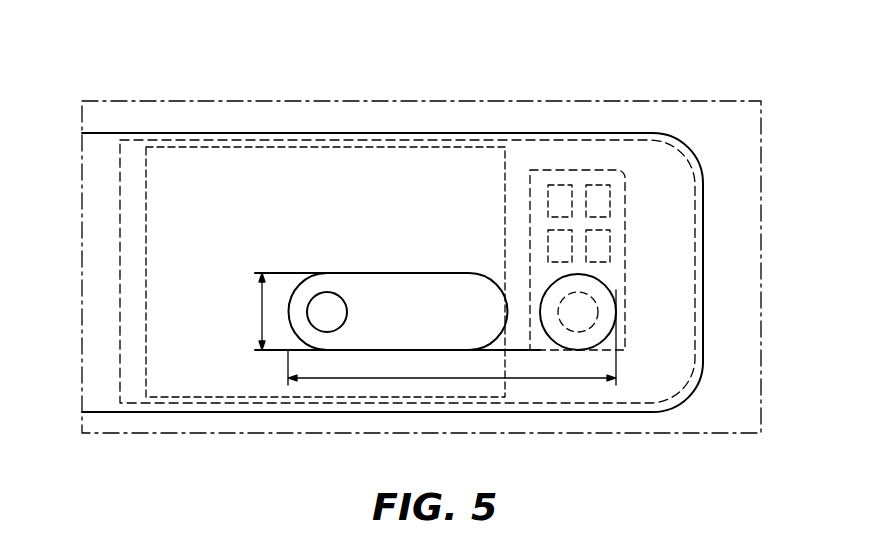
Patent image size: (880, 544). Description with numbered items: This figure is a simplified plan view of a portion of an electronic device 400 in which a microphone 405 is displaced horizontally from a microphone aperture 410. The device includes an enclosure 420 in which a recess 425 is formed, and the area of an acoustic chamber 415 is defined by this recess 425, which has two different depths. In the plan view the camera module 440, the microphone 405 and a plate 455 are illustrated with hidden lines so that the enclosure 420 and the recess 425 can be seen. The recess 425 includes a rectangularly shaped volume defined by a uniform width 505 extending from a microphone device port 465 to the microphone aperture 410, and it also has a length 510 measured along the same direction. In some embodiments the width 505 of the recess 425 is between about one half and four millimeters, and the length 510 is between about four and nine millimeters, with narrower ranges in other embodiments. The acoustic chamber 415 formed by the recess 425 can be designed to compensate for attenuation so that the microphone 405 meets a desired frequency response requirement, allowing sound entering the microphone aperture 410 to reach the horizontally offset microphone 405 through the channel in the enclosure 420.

The electronic device 400 is at (272, 72).
The microphone 405 is at (587, 170).
The microphone aperture 410 is at (344, 300).
The acoustic chamber 415 is at (458, 334).
The enclosure 420 is at (408, 115).
The recess 425 is at (455, 313).
The camera module 440 is at (300, 147).
The plate 455 is at (120, 272).
The microphone device port 465 is at (582, 309).
The width 505 is at (262, 312).
The length 510 is at (410, 380).